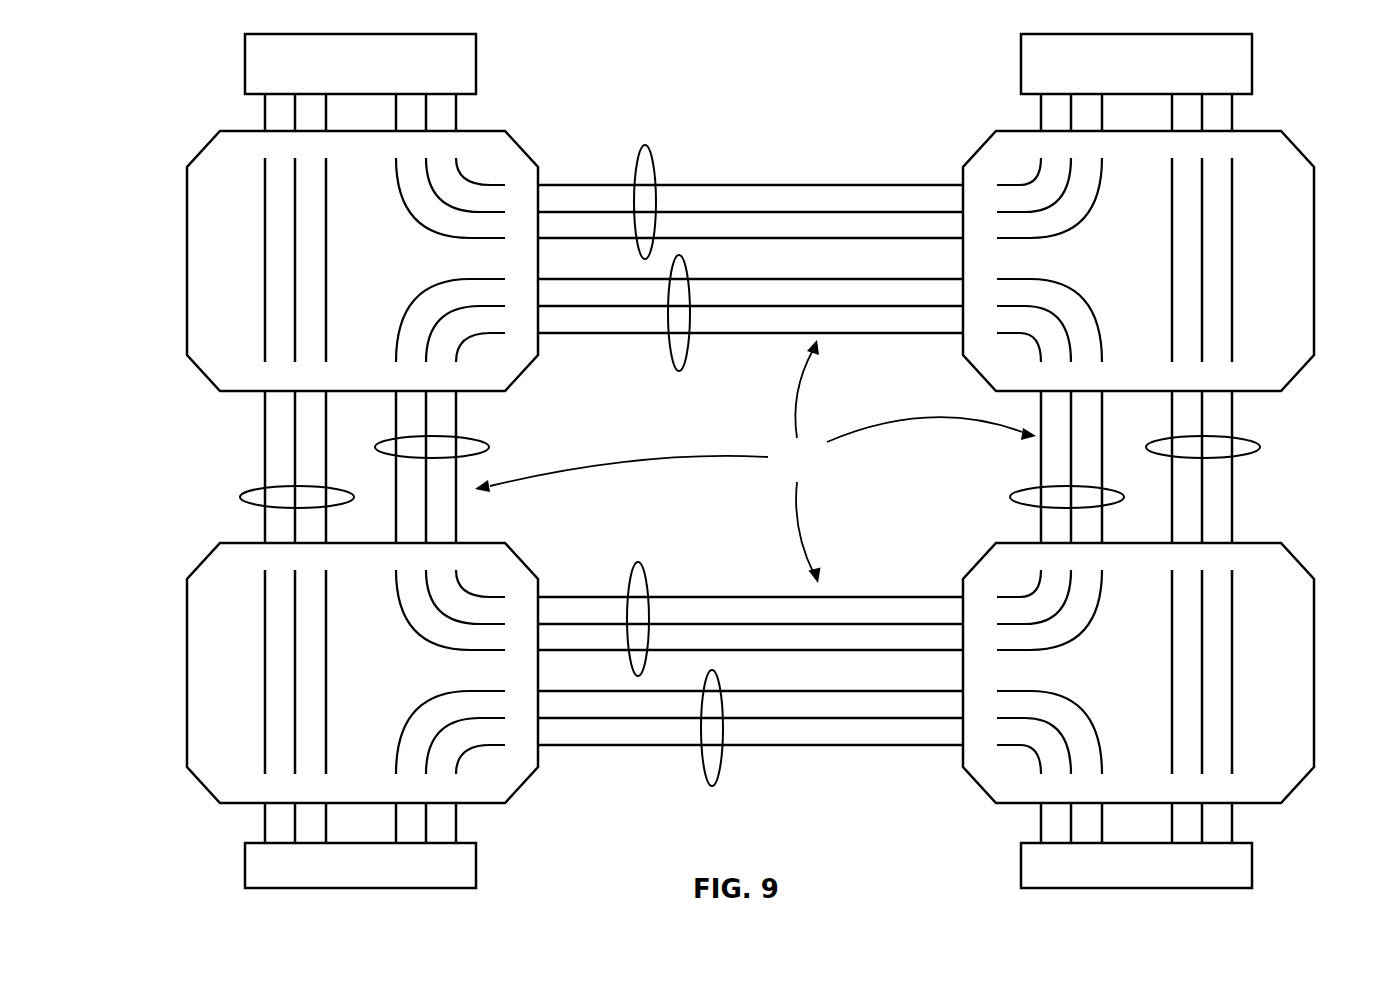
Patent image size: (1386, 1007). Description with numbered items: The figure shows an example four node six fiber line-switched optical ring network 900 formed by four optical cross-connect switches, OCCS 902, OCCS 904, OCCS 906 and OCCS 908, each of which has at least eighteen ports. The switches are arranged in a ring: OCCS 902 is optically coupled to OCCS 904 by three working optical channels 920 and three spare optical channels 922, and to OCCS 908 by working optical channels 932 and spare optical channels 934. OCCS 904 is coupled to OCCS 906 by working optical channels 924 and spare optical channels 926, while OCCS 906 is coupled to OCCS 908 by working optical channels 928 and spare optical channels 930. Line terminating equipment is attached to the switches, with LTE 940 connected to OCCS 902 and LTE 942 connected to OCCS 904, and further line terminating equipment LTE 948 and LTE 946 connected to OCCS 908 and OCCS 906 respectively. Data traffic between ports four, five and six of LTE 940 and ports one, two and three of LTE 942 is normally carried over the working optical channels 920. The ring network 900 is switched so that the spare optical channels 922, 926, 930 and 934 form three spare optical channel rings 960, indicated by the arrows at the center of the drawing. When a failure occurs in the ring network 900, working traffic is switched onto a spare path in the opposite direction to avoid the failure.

The ring network 900 is at (760, 84).
The OCCS 902 is at (204, 148).
The OCCS 904 is at (1298, 148).
The OCCS 906 is at (1304, 568).
The OCCS 908 is at (204, 560).
The working optical channels 920 is at (645, 145).
The spare optical channels 922 is at (679, 371).
The working optical channels 924 is at (1258, 440).
The spare optical channels 926 is at (1016, 490).
The working optical channels 928 is at (712, 786).
The spare optical channels 930 is at (638, 562).
The working optical channels 932 is at (244, 490).
The spare optical channels 934 is at (491, 440).
The LTE 940 is at (478, 64).
The LTE 942 is at (1254, 64).
The line terminating equipment (LTE) 946 is at (1252, 863).
The line terminating equipment (LTE) 948 is at (245, 863).
The spare optical channel rings 960 is at (755, 461).